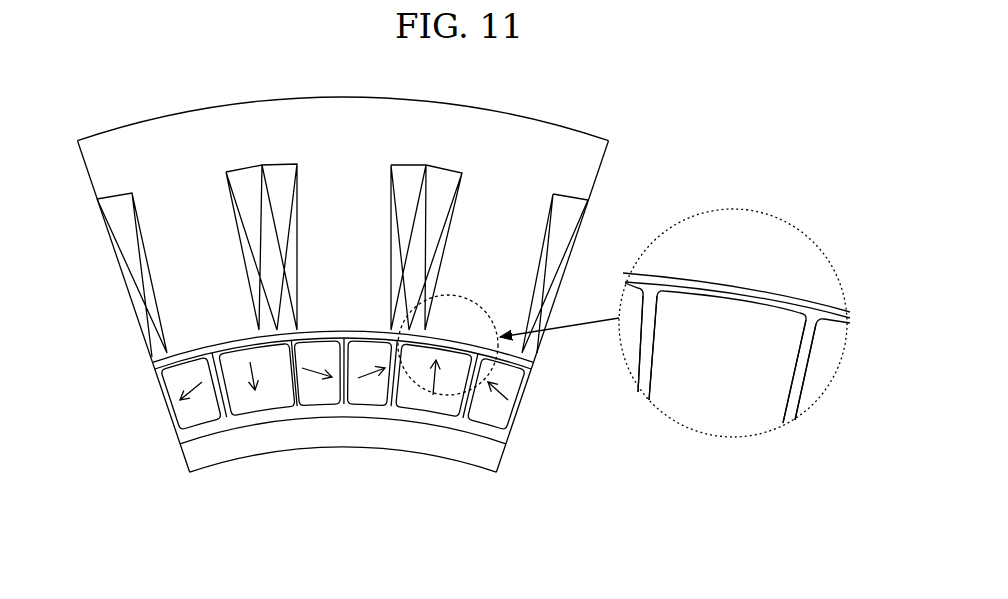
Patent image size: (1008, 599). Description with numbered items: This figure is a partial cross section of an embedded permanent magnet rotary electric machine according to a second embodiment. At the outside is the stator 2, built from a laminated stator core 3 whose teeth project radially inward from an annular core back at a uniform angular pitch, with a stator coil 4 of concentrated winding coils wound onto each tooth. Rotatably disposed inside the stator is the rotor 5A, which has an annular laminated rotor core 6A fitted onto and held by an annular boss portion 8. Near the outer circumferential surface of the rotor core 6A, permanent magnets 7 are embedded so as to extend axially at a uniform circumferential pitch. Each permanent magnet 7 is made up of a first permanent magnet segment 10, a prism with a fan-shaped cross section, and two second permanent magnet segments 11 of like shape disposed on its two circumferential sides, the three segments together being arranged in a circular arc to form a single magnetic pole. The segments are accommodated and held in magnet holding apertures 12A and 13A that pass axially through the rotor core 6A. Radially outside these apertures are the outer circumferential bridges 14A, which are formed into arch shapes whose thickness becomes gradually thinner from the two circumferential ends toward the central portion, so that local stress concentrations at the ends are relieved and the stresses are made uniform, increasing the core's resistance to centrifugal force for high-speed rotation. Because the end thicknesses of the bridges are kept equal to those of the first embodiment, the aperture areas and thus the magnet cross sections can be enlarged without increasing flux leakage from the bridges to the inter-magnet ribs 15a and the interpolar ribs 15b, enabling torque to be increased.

The stator 2 is at (662, 120).
The stator core 3 is at (596, 153).
The stator coil 4 is at (575, 214).
The rotor 5A is at (475, 354).
The rotor core 6A is at (174, 436).
The permanent magnet 7 is at (225, 497).
The annular boss portion 8 is at (188, 459).
The first permanent magnet segment 10 is at (260, 415).
The second permanent magnet segment 11 is at (205, 418).
The magnet holding aperture 12A is at (221, 374).
The magnet holding aperture 13A is at (173, 400).
The outer circumferential bridge 14A is at (745, 288).
The inter-magnet rib 15a is at (645, 372).
The interpolar rib 15b is at (345, 410).